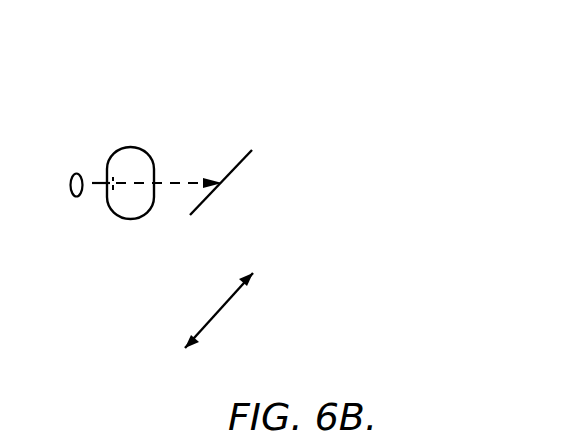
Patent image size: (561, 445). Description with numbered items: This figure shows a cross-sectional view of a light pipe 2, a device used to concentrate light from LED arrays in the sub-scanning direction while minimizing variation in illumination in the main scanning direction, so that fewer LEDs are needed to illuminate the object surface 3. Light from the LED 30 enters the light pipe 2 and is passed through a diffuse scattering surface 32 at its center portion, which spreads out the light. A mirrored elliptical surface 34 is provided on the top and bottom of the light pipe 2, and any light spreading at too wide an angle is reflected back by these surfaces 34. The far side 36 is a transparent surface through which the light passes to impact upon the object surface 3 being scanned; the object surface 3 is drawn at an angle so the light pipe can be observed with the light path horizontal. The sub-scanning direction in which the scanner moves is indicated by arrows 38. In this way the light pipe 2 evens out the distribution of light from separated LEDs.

The light pipe 2 is at (115, 153).
The object surface 3 is at (242, 162).
The LED 30 is at (73, 199).
The diffuse scattering surface 32 is at (108, 172).
The mirrored elliptical surface 34 is at (137, 147).
The transparent surface 36 is at (154, 166).
The arrows 38 is at (220, 306).